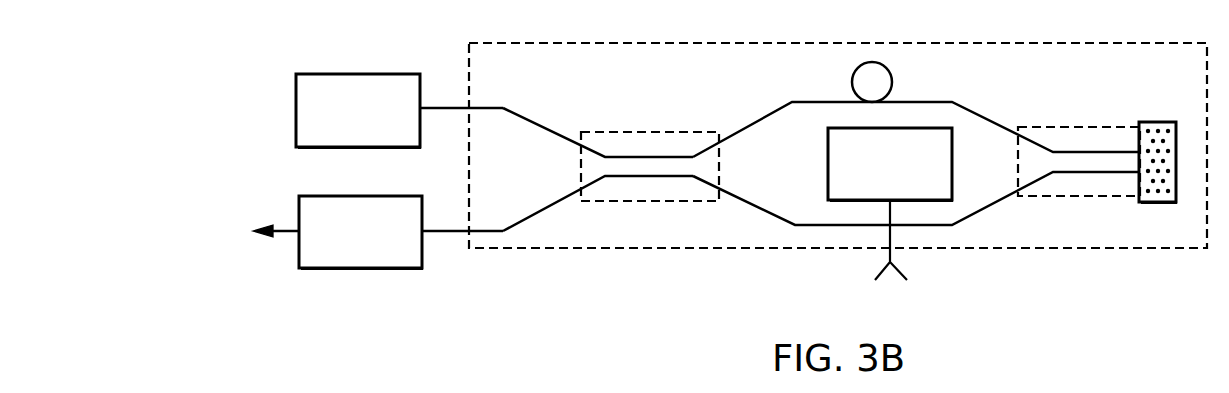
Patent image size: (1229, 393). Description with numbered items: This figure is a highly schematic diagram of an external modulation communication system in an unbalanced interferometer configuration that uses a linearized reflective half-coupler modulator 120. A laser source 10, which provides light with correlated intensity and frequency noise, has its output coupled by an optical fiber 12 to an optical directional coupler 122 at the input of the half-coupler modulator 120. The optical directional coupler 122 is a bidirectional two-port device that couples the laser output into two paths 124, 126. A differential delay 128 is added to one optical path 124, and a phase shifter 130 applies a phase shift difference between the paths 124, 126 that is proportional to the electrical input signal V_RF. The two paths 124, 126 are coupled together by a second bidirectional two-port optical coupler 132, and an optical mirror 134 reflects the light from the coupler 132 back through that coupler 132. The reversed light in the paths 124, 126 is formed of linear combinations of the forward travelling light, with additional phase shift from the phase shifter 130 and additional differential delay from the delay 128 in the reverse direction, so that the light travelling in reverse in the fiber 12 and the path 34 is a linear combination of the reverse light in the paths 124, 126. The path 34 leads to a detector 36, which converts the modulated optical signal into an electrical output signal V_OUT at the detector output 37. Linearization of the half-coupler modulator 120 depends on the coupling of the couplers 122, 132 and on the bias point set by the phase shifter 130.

The laser source 10 is at (355, 73).
The optical fiber 12 is at (436, 107).
The path 34 is at (437, 231).
The detector 36 is at (366, 268).
The detector output 37 is at (283, 233).
The half-coupler modulator 120 is at (486, 43).
The optical directional coupler 122 is at (606, 131).
The optical path 124 is at (757, 123).
The optical path 126 is at (757, 206).
The differential delay 128 is at (852, 81).
The phase shifter 130 is at (826, 162).
The optical coupler 132 is at (1046, 125).
The optical mirror 134 is at (1154, 118).